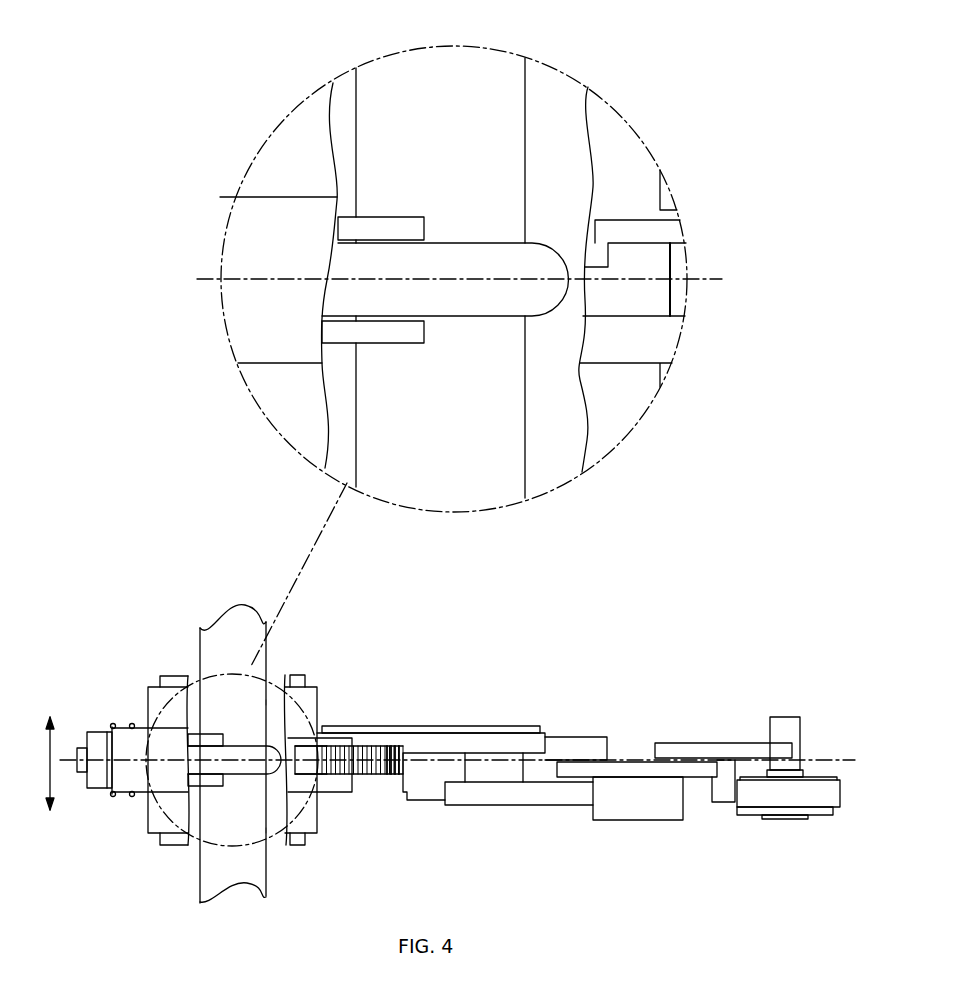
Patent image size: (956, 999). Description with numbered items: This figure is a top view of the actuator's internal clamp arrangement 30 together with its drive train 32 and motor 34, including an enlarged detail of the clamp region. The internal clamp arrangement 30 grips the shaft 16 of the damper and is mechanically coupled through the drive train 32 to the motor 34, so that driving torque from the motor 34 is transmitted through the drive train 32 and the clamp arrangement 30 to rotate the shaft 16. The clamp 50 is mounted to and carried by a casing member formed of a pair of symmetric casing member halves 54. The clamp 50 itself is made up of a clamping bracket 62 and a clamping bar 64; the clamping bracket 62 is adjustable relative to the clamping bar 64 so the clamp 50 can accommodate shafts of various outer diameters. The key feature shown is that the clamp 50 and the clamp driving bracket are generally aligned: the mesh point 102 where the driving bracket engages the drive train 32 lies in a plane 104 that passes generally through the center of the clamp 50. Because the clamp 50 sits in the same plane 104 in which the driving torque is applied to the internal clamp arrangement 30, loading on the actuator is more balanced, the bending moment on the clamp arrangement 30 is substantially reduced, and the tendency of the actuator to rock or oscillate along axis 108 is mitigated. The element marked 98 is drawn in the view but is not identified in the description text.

The shaft 16 is at (515, 83).
The internal clamp arrangement 30 is at (146, 850).
The drive train 32 is at (363, 755).
The motor 34 is at (786, 838).
The clamp 50 is at (232, 712).
The casing member halves 54 is at (318, 722).
The clamping bracket 62 is at (555, 267).
The clamping bar 64 is at (397, 230).
The bushing 98 is at (276, 698).
The mesh point 102 is at (410, 752).
The plane 104 is at (707, 278).
The axis 108 is at (53, 770).